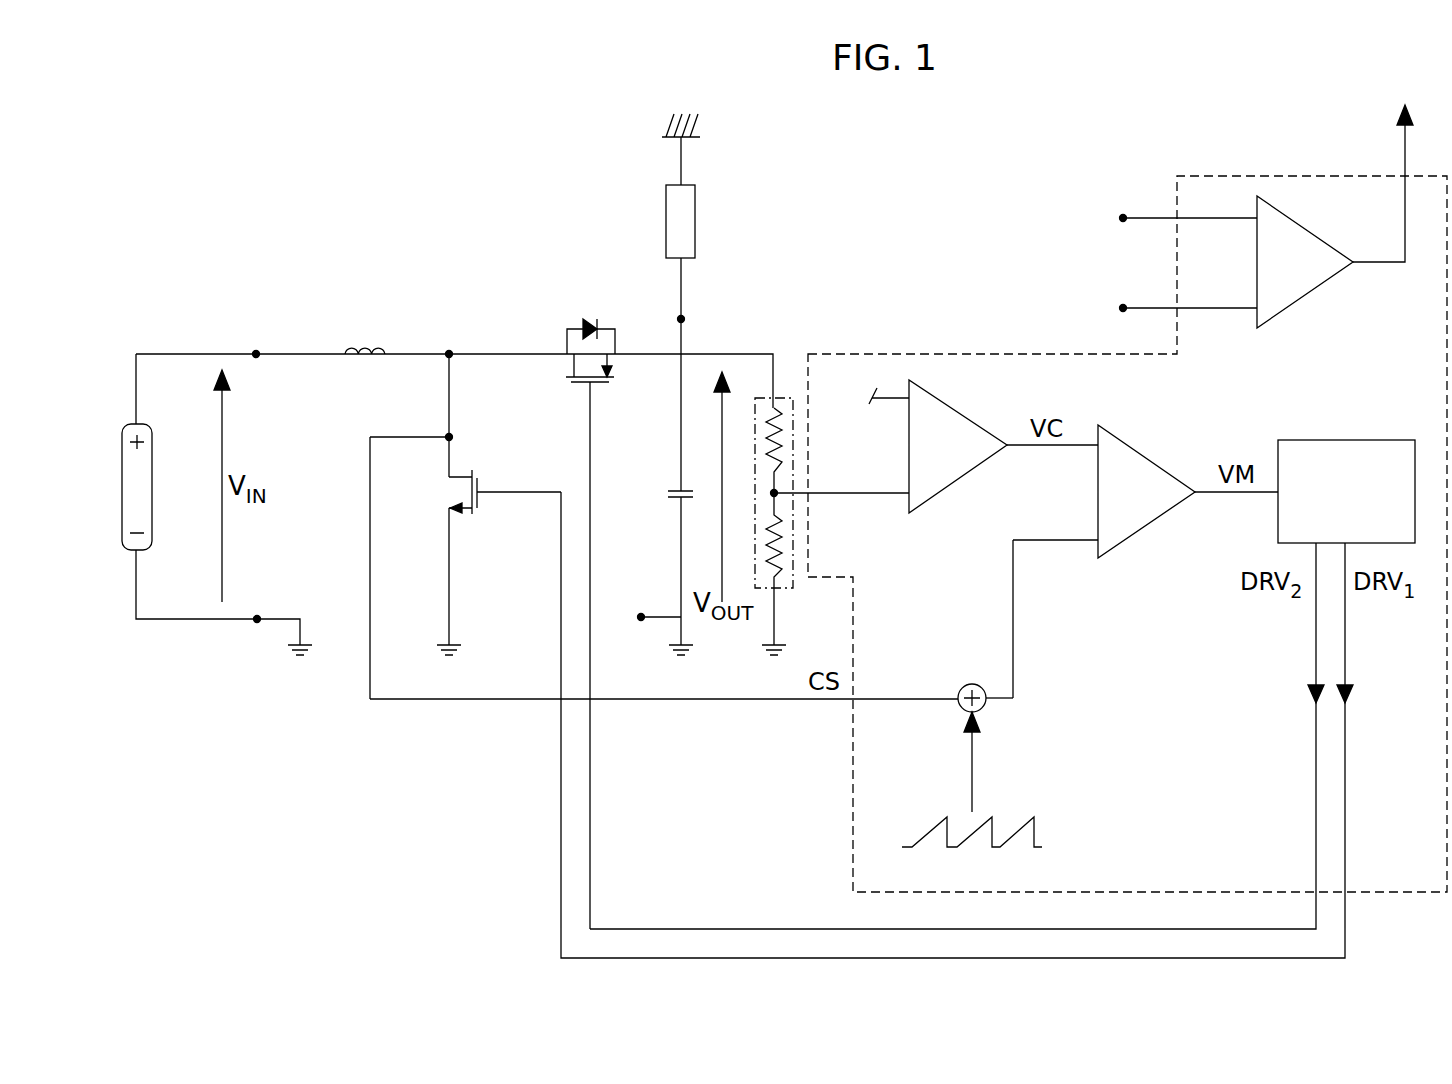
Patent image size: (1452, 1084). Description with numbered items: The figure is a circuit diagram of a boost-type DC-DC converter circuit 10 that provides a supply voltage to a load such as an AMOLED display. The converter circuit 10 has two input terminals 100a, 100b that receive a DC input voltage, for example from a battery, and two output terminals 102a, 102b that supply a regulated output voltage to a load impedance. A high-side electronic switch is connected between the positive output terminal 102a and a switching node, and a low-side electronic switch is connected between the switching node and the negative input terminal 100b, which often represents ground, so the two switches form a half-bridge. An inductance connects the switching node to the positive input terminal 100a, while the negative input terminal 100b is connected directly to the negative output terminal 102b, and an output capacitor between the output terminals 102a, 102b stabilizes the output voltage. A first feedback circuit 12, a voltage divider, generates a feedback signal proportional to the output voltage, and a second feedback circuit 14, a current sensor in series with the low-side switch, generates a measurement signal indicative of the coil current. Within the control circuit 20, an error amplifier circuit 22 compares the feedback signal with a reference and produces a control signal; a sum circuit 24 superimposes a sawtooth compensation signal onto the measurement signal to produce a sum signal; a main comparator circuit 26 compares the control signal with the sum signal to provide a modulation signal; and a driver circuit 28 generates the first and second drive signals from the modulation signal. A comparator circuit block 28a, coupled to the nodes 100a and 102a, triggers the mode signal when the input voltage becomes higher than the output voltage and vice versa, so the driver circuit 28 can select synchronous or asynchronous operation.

The boost-type DC-DC converter circuit 10 is at (913, 240).
The first feedback circuit 12 is at (785, 398).
The second feedback circuit 14 is at (452, 437).
The control circuit 20 is at (1425, 877).
The error amplifier circuit 22 is at (948, 428).
The sum circuit 24 is at (962, 688).
The main comparator circuit 26 is at (1138, 475).
The driver circuit 28 is at (1310, 465).
The comparator circuit block 28a is at (1300, 277).
The input terminal 100a is at (256, 353).
The input terminal 100b is at (257, 621).
The output terminal 102a is at (684, 318).
The output terminal 102b is at (641, 620).